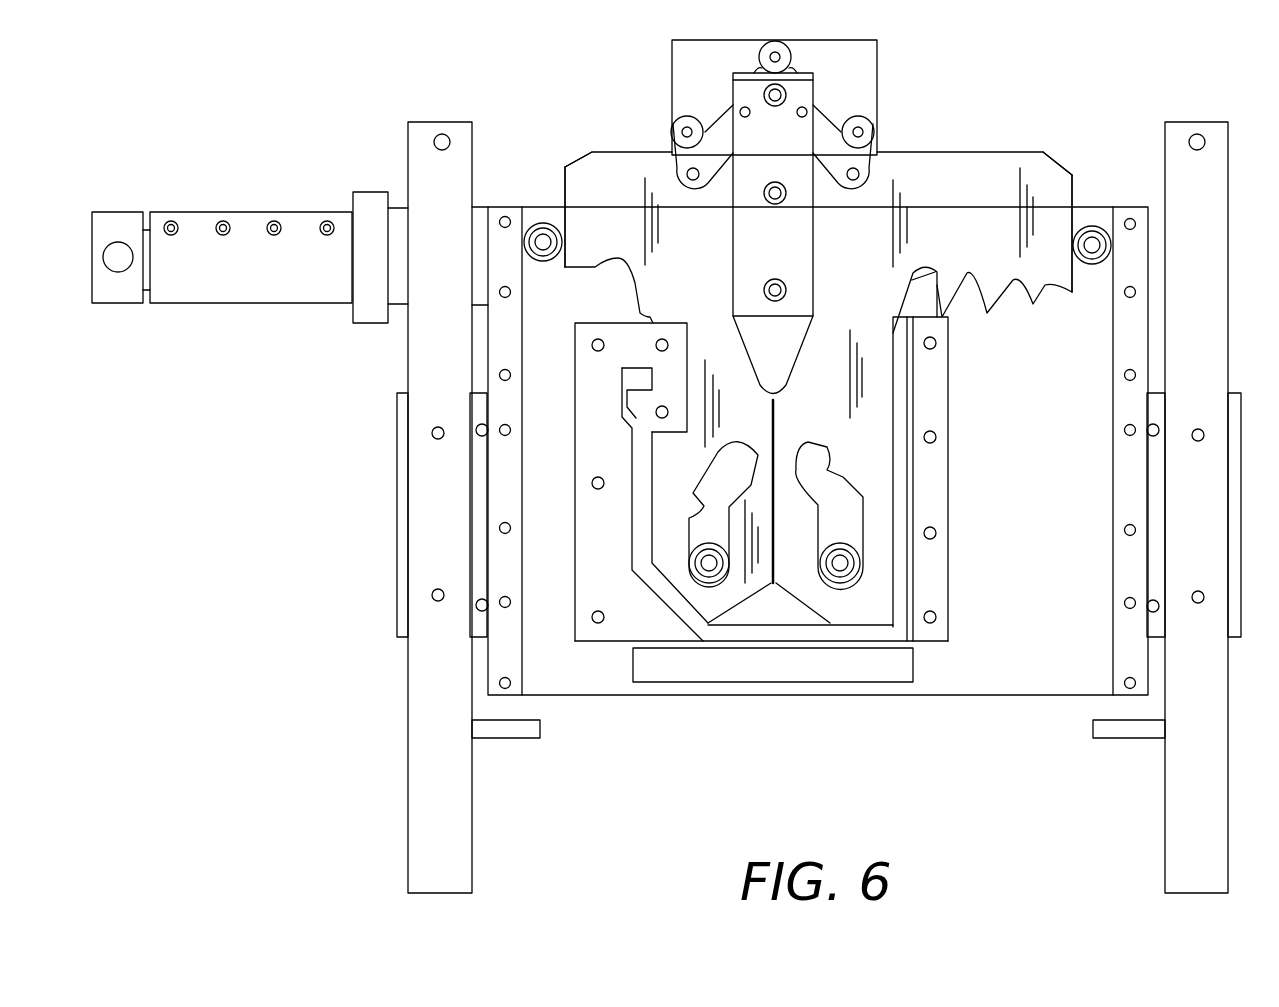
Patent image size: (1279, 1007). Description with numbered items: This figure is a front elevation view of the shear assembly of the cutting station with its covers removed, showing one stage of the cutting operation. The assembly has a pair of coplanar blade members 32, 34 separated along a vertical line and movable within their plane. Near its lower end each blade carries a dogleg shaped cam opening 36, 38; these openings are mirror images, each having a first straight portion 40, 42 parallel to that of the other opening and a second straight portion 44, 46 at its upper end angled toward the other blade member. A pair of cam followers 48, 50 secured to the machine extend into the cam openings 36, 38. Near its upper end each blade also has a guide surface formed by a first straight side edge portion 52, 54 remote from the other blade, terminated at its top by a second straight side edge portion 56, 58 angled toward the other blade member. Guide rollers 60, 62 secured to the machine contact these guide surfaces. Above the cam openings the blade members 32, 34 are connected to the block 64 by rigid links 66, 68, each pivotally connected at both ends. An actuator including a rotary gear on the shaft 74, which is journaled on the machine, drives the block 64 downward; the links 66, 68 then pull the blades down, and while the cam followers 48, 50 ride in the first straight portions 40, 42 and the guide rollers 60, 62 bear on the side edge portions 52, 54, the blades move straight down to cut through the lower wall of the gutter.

The blade member 32 is at (618, 182).
The blade member 34 is at (958, 190).
The dogleg shaped cam opening 36 is at (705, 510).
The dogleg shaped cam opening 38 is at (827, 473).
The first straight portion 40 is at (690, 538).
The first straight portion 42 is at (863, 513).
The second straight portion 44 is at (707, 462).
The second straight portion 46 is at (862, 485).
The cam follower 48 is at (709, 565).
The cam follower 50 is at (840, 565).
The first straight side edge portion 52 is at (565, 182).
The first straight side edge portion 54 is at (1073, 192).
The second straight side edge portion 56 is at (577, 163).
The second straight side edge portion 58 is at (1057, 158).
The guide roller 60 is at (540, 262).
The guide roller 62 is at (1093, 265).
The block 64 is at (792, 238).
The rigid link 66 is at (712, 157).
The rigid link 68 is at (887, 157).
The shaft 74 is at (232, 212).